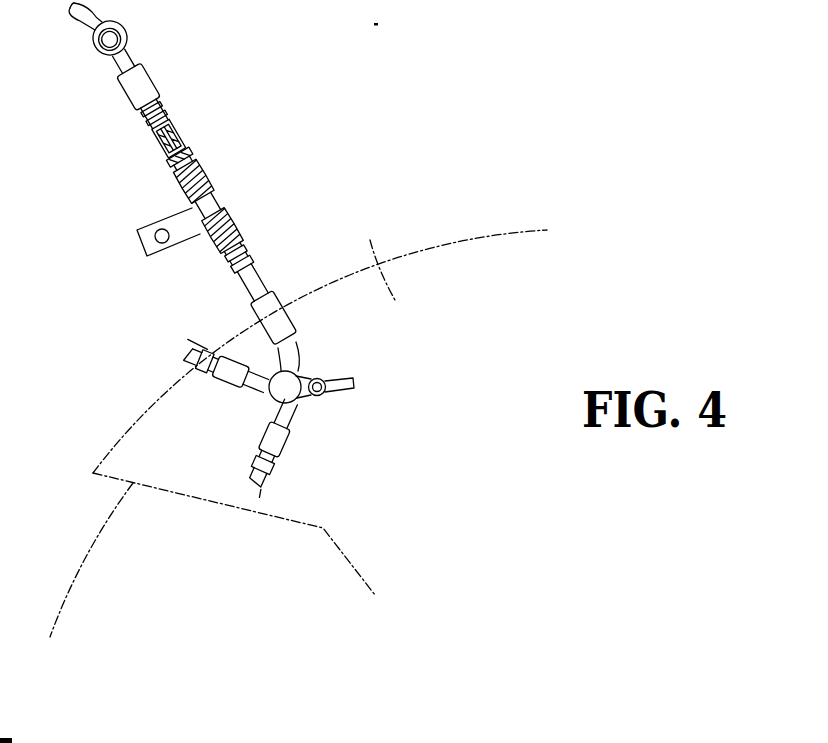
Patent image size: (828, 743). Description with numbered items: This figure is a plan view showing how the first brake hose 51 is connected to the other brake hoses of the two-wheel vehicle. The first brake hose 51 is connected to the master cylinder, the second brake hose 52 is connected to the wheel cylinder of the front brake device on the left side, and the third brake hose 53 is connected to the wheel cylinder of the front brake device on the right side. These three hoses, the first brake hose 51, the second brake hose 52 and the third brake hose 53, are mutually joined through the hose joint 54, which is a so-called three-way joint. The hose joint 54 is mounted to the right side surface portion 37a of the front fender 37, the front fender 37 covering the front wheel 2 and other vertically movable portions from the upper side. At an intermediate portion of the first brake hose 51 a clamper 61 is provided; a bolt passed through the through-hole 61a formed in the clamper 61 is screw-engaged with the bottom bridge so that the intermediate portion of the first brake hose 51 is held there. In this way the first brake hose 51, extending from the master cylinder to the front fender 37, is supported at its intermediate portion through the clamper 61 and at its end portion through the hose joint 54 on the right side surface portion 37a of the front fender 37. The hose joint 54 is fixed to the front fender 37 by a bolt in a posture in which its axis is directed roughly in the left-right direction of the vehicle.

The front wheel 2 is at (110, 528).
The front fender 37 is at (446, 237).
The right side surface portion 37a is at (376, 259).
The first brake hose 51 is at (267, 284).
The second brake hose 52 is at (182, 363).
The third brake hose 53 is at (238, 472).
The hose joint 54 is at (317, 366).
The clamper 61 is at (158, 222).
The through-hole 61a is at (143, 247).